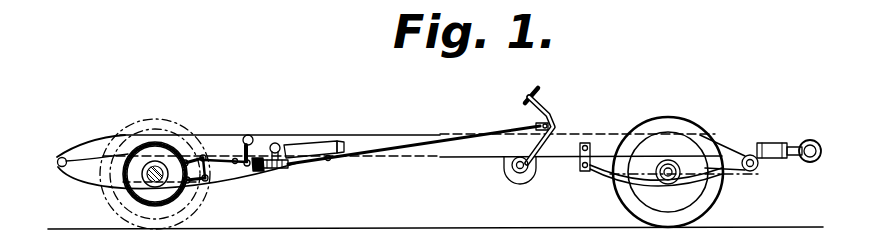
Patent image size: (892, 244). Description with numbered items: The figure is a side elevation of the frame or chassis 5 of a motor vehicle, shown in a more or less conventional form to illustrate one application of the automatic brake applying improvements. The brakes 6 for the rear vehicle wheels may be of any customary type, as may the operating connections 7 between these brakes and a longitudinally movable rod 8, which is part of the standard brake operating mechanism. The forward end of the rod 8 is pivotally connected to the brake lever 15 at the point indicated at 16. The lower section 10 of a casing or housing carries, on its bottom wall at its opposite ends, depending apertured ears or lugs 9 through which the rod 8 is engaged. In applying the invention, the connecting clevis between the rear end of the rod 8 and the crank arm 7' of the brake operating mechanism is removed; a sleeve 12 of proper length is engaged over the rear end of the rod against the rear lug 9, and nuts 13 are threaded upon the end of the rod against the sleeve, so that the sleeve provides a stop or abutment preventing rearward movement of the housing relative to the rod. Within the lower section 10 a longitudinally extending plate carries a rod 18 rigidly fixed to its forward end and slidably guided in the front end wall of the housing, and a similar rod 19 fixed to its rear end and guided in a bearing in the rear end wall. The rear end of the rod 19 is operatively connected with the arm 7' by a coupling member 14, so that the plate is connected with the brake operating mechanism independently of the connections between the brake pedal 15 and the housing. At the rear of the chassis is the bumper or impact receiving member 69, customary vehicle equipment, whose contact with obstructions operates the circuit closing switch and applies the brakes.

The frame or chassis 5 is at (381, 138).
The brakes 6 is at (168, 152).
The operating connections 7 is at (177, 192).
The crank arm 7' is at (263, 124).
The longitudinally movable rod 8 is at (414, 152).
The depending apertured ears or lugs 9 is at (328, 161).
The lower section of casing or housing 10 is at (297, 150).
The sleeve 12 is at (268, 175).
The nuts 13 is at (260, 170).
The coupling member 14 is at (258, 160).
The brake lever 15 is at (547, 102).
The pivotal connection 16 is at (552, 124).
The rod 18 is at (339, 148).
The rod 19 is at (282, 147).
The bumper or impact receiving member 69 is at (808, 140).